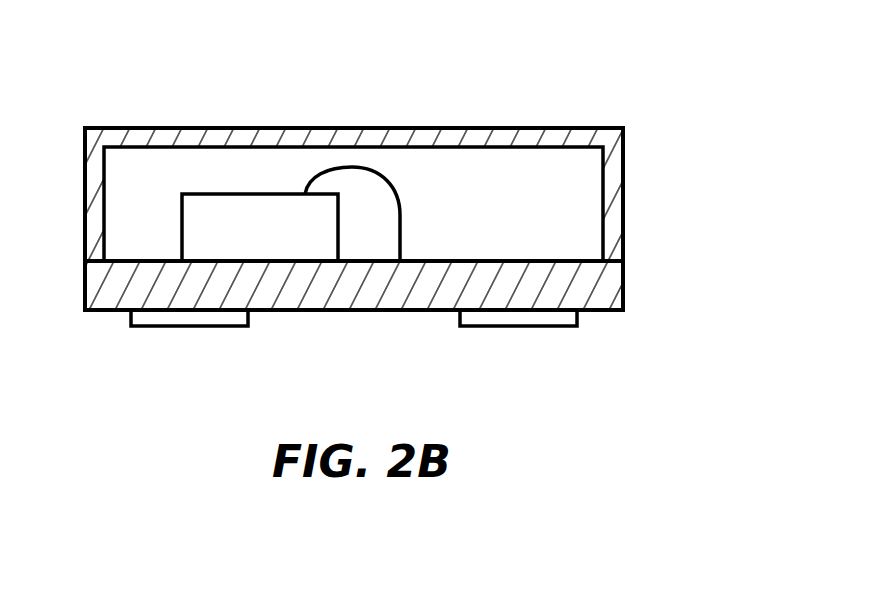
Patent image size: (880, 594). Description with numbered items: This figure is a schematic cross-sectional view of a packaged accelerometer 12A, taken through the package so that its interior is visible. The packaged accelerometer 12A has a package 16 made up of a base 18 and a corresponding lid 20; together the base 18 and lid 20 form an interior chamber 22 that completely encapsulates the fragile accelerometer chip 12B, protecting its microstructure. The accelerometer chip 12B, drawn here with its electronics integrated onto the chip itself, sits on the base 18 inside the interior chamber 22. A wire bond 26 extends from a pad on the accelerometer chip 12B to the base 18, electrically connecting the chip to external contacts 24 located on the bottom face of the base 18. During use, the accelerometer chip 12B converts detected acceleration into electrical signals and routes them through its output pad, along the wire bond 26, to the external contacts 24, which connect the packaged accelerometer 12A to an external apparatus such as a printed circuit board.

The packaged accelerometer 12A is at (585, 76).
The accelerometer chip 12B is at (214, 206).
The package 16 is at (640, 128).
The base 18 is at (97, 287).
The lid 20 is at (97, 194).
The interior chamber 22 is at (572, 236).
The external contacts 24 is at (447, 331).
The wire bond 26 is at (412, 185).